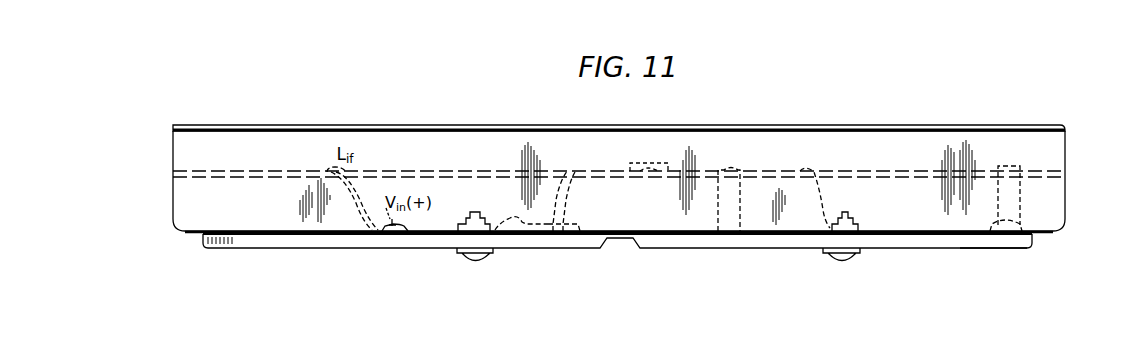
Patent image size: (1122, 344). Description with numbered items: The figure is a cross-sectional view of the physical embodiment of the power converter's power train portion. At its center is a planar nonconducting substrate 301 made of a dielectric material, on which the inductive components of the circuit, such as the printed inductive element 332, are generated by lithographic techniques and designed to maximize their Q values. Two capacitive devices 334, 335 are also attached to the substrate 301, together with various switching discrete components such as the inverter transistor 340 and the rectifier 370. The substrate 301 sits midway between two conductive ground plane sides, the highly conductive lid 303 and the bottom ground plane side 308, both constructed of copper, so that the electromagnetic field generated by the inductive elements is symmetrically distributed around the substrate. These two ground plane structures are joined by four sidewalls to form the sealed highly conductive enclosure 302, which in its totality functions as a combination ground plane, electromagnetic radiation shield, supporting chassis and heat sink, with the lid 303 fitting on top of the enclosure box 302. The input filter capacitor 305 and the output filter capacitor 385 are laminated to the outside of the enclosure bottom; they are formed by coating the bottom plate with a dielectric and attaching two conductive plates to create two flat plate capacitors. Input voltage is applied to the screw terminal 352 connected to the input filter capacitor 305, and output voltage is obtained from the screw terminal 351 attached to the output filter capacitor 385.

The nonconducting substrate 301 is at (840, 170).
The highly conductive enclosure 302 is at (1066, 180).
The highly conductive lid 303 is at (277, 125).
The input filter capacitor 305 is at (395, 250).
The conductive ground plane side 308 is at (256, 230).
The inductive element 332 is at (1028, 166).
The capacitive device 334 is at (627, 163).
The capacitive device 335 is at (741, 168).
The inverter transistor Qinv 340 is at (570, 210).
The output screw terminal 351 is at (858, 258).
The input screw terminal 352 is at (493, 258).
The rectifier diode Drct 370 is at (1025, 229).
The output filter capacitor 385 is at (995, 249).